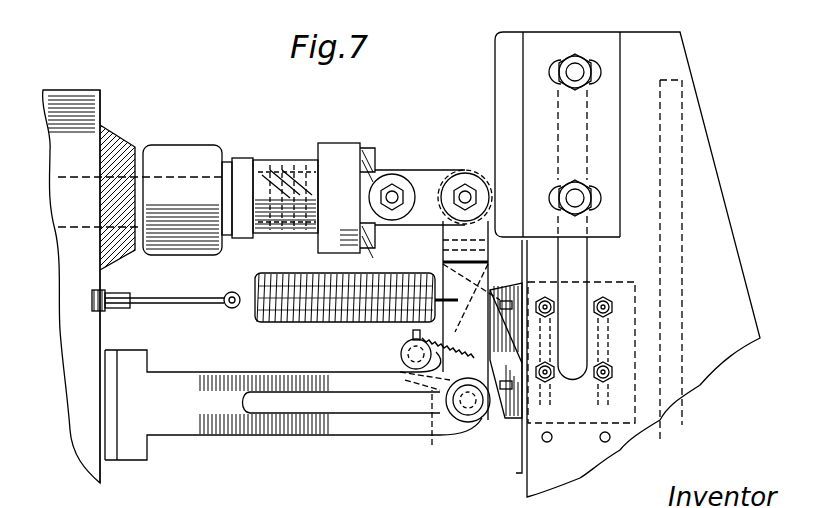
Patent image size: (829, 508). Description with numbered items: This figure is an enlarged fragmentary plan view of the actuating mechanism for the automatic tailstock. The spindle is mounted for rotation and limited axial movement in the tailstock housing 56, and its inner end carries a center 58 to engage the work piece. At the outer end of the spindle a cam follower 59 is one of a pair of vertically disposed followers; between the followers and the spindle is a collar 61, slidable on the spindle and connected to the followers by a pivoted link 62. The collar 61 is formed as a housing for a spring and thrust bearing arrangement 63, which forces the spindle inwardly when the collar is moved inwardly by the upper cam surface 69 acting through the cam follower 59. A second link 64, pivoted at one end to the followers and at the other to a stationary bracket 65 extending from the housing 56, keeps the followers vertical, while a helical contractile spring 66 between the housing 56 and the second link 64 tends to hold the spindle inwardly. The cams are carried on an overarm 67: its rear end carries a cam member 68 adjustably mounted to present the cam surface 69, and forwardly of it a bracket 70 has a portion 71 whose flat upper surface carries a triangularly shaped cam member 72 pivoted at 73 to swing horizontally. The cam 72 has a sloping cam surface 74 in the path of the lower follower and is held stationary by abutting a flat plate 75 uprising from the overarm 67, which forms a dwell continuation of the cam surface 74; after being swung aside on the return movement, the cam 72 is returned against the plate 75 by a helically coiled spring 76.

The tailstock housing 56 is at (103, 478).
The center 58 is at (140, 195).
The cam follower 59 is at (462, 172).
The collar 61 is at (305, 162).
The pivoted link 62 is at (422, 180).
The spring and thrust bearing arrangement 63 is at (292, 170).
The second link 64 is at (448, 243).
The stationary bracket 65 is at (202, 422).
The helical contractile spring 66 is at (296, 318).
The overarm 67 is at (640, 72).
The cam member 68 is at (537, 38).
The cam surface 69 is at (495, 70).
The bracket 70 is at (568, 405).
The portion 71 is at (363, 409).
The triangularly shaped cam member 72 is at (476, 416).
The pivot 73 is at (401, 353).
The cam surface 74 is at (498, 292).
The flat plate 75 is at (518, 444).
The helically coiled spring 76 is at (451, 338).